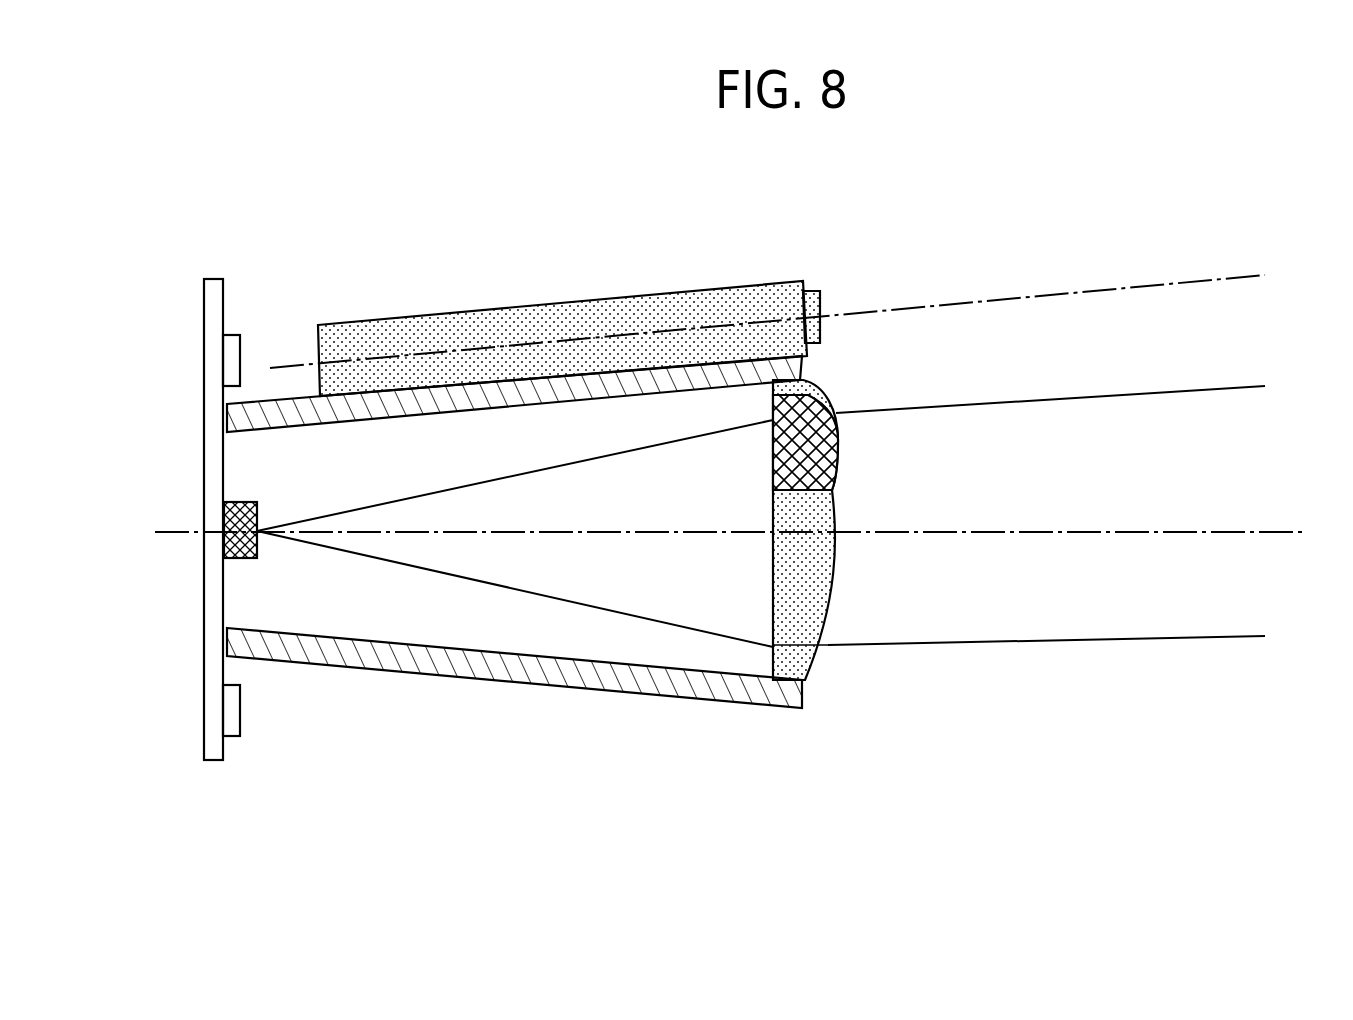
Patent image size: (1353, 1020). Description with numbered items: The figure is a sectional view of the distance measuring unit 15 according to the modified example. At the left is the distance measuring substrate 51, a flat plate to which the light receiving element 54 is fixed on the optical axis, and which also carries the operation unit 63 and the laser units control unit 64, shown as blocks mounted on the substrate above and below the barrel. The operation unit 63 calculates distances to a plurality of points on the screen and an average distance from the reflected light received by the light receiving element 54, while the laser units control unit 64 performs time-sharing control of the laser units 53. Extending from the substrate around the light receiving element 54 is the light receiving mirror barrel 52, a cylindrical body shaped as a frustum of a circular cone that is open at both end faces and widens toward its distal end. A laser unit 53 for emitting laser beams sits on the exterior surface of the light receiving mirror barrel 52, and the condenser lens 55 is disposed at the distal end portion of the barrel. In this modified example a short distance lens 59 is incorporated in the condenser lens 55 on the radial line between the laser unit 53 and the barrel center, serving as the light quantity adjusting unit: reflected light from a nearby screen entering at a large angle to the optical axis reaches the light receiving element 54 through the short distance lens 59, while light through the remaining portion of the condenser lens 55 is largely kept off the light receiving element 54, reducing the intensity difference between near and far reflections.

The distance measuring unit 15 is at (240, 192).
The distance measuring substrate 51 is at (212, 312).
The light receiving mirror barrel 52 is at (600, 676).
The laser unit 53 is at (465, 330).
The light receiving element 54 is at (228, 520).
The condenser lens 55 is at (807, 655).
The short distance lens 59 is at (813, 465).
The operation unit 63 is at (240, 336).
The laser units control unit 64 is at (243, 737).